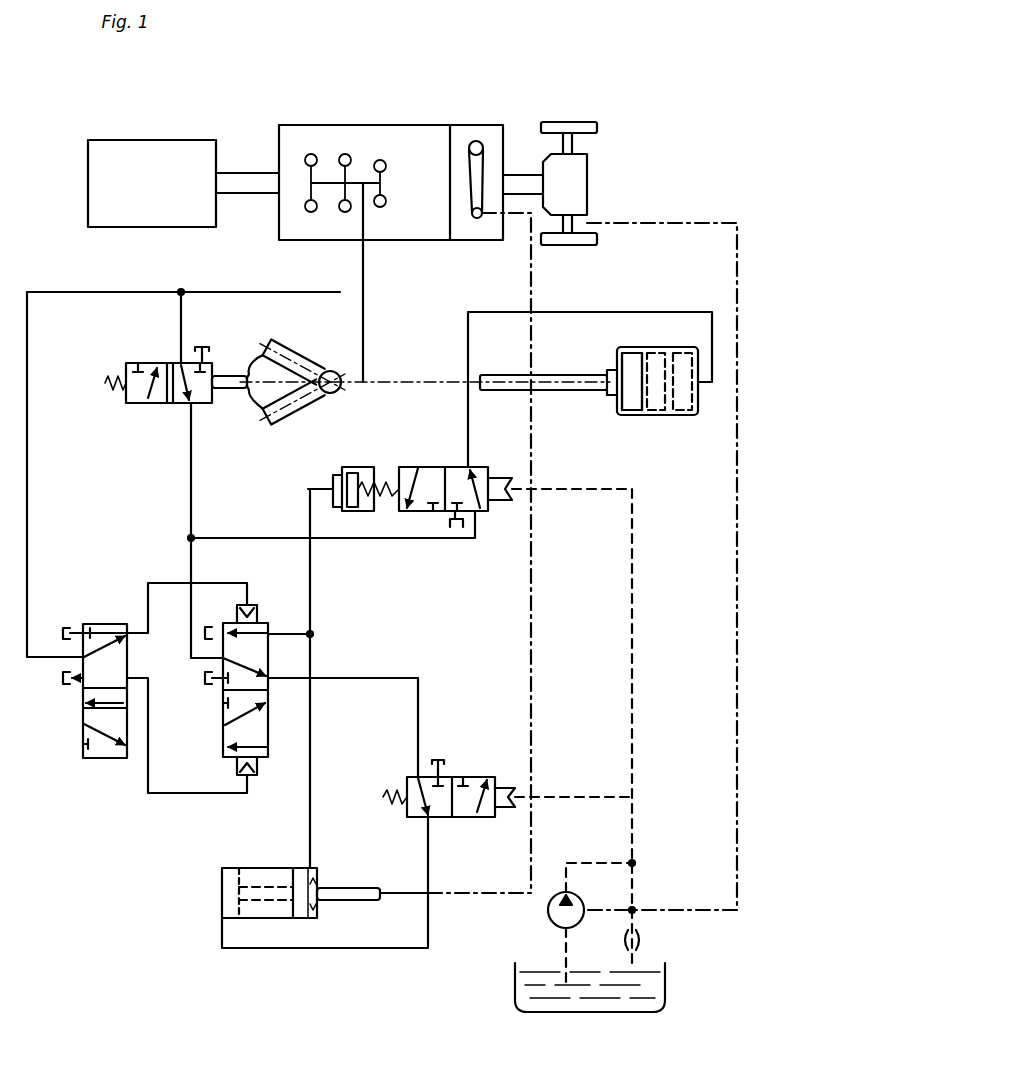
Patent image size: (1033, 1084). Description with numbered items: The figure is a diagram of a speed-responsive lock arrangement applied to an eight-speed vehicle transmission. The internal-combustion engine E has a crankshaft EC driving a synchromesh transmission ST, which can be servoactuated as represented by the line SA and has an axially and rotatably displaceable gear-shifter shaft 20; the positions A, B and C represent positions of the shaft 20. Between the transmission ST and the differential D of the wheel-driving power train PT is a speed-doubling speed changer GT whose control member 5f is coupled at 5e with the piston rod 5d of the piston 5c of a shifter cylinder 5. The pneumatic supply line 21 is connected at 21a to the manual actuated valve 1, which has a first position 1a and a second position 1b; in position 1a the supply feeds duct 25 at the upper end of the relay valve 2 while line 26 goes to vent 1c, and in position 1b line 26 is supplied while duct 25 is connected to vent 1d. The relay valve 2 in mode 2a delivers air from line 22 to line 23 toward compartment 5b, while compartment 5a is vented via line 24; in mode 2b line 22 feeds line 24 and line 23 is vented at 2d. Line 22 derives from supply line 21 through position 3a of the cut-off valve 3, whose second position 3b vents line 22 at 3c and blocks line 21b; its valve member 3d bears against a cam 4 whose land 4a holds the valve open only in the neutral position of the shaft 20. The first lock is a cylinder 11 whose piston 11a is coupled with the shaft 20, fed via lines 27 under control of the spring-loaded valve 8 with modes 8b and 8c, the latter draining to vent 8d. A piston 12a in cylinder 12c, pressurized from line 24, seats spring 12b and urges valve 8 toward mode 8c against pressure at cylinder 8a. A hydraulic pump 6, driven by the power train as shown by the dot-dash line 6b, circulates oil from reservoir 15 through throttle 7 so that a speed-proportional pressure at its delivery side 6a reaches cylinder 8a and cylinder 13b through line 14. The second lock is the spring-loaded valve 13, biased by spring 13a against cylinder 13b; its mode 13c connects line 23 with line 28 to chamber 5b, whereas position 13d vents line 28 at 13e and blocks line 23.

The internal-combustion engine E is at (128, 160).
The crankshaft EC is at (240, 180).
The synchromesh transmission ST is at (415, 140).
The speed-doubling speed changer GT is at (465, 138).
The wheel-driving power train PT is at (613, 133).
The differential D is at (580, 182).
The servoactuation line SA is at (366, 302).
The control member 5f is at (479, 170).
The coupling 5e is at (535, 630).
The dot-dash line 6b is at (735, 635).
The pneumatic supply line 21 is at (112, 292).
The supply line branch 21a is at (30, 338).
The supply line branch 21b is at (181, 332).
The main valve 3 is at (151, 389).
The first valve position 3a is at (185, 397).
The second operating position 3b is at (142, 393).
The vent 3c is at (204, 350).
The valve member 3d is at (235, 385).
The cam 4 is at (425, 363).
The land 4a is at (249, 368).
The lines 27 is at (468, 348).
The gear-shifter shaft 20 is at (556, 377).
The cylinder 11 is at (657, 367).
The piston 11a is at (632, 413).
The shaft position A is at (686, 360).
The shaft position B is at (659, 360).
The shaft position C is at (630, 357).
The valve 8 is at (452, 500).
The cylinder 8a is at (497, 497).
The first operating mode 8b is at (479, 510).
The other operating position 8c is at (412, 505).
The vent 8d is at (447, 527).
The piston 12a is at (352, 500).
The spring 12b is at (385, 487).
The cylinder 12c is at (335, 468).
The line 14 is at (636, 630).
The line 22 is at (188, 517).
The line 23 is at (350, 678).
The line 24 is at (316, 634).
The duct 25 is at (157, 582).
The line 26 is at (181, 797).
The line 28 is at (292, 950).
The manual actuated valve 1 is at (64, 675).
The first position 1a is at (100, 666).
The second position 1b is at (85, 742).
The vent 1c is at (80, 680).
The vent 1d is at (76, 630).
The relay valve 2 is at (236, 690).
The valve section 2a is at (255, 652).
The valve mode 2b is at (253, 718).
The vent 2d is at (218, 680).
The spring-loaded valve 13 is at (485, 791).
The fixed-characteristic spring 13a is at (385, 792).
The cylinder 13b is at (500, 792).
The first operating mode 13c is at (443, 805).
The position 13d is at (490, 810).
The vent 13e is at (437, 775).
The shifter cylinder 5 is at (319, 870).
The compartment 5a is at (314, 873).
The compartment 5b is at (223, 868).
The piston 5c is at (299, 878).
The piston rod 5d is at (360, 893).
The hydraulic pump 6 is at (565, 903).
The delivery side 6a is at (585, 863).
The throttle 7 is at (640, 940).
The reservoir 15 is at (640, 965).